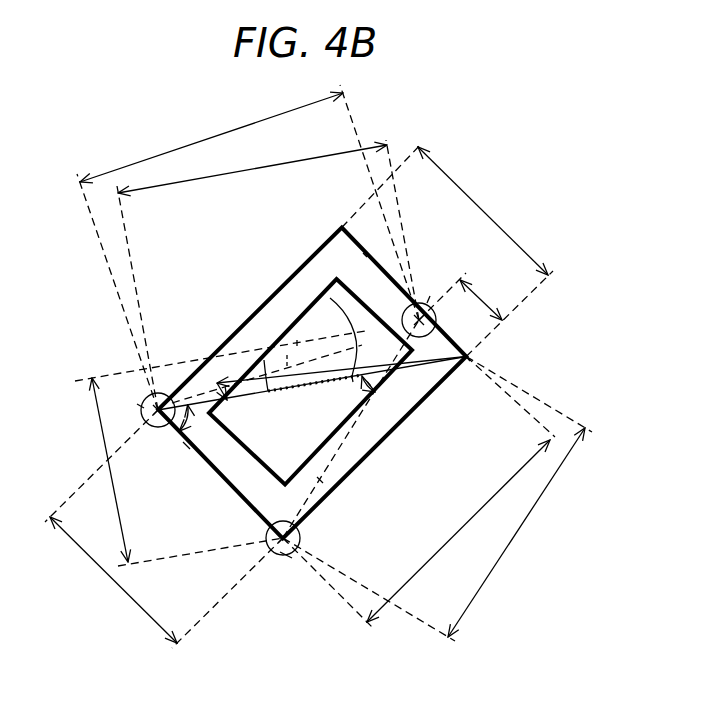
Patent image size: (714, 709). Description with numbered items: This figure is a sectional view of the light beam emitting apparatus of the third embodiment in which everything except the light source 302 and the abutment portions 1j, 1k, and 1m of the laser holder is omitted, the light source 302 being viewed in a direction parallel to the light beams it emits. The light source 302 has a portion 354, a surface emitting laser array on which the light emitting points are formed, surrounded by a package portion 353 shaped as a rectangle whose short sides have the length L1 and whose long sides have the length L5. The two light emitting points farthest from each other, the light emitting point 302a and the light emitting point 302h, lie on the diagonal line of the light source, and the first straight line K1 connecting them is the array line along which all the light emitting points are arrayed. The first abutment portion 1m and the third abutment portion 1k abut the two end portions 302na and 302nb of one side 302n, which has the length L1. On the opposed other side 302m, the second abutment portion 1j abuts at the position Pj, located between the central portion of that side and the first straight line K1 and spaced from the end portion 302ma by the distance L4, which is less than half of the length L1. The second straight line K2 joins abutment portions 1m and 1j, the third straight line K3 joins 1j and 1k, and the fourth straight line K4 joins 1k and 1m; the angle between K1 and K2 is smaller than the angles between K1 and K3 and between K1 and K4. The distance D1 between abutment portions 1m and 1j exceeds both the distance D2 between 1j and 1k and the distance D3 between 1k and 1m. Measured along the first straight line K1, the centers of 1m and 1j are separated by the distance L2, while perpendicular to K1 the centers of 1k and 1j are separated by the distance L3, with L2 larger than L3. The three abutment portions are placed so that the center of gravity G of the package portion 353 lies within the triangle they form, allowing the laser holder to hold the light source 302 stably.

The light source 302 is at (392, 433).
The light emitting point 302h is at (314, 381).
The other side 302m is at (363, 253).
The light emitting point 302a is at (264, 360).
The end portion 302ma is at (466, 357).
The end portion 302na is at (140, 406).
The one side 302n is at (236, 490).
The end portion 302nb is at (286, 556).
The surface emitting laser array portion 354 is at (252, 455).
The package portion 353 is at (320, 482).
The second abutment portion 1j is at (427, 303).
The first abutment portion 1m is at (148, 398).
The third abutment portion 1k is at (272, 548).
The position Pj is at (437, 320).
The center of gravity G is at (297, 346).
The first straight line K1 is at (193, 385).
The second straight line K2 is at (287, 355).
The third straight line K3 is at (338, 443).
The fourth straight line K4 is at (183, 442).
The distance D1 is at (248, 247).
The distance D2 is at (437, 499).
The distance D3 is at (164, 529).
The length L1 is at (447, 250).
The distance L2 is at (268, 275).
The distance L3 is at (115, 470).
The distance L4 is at (463, 296).
The length L5 is at (419, 492).